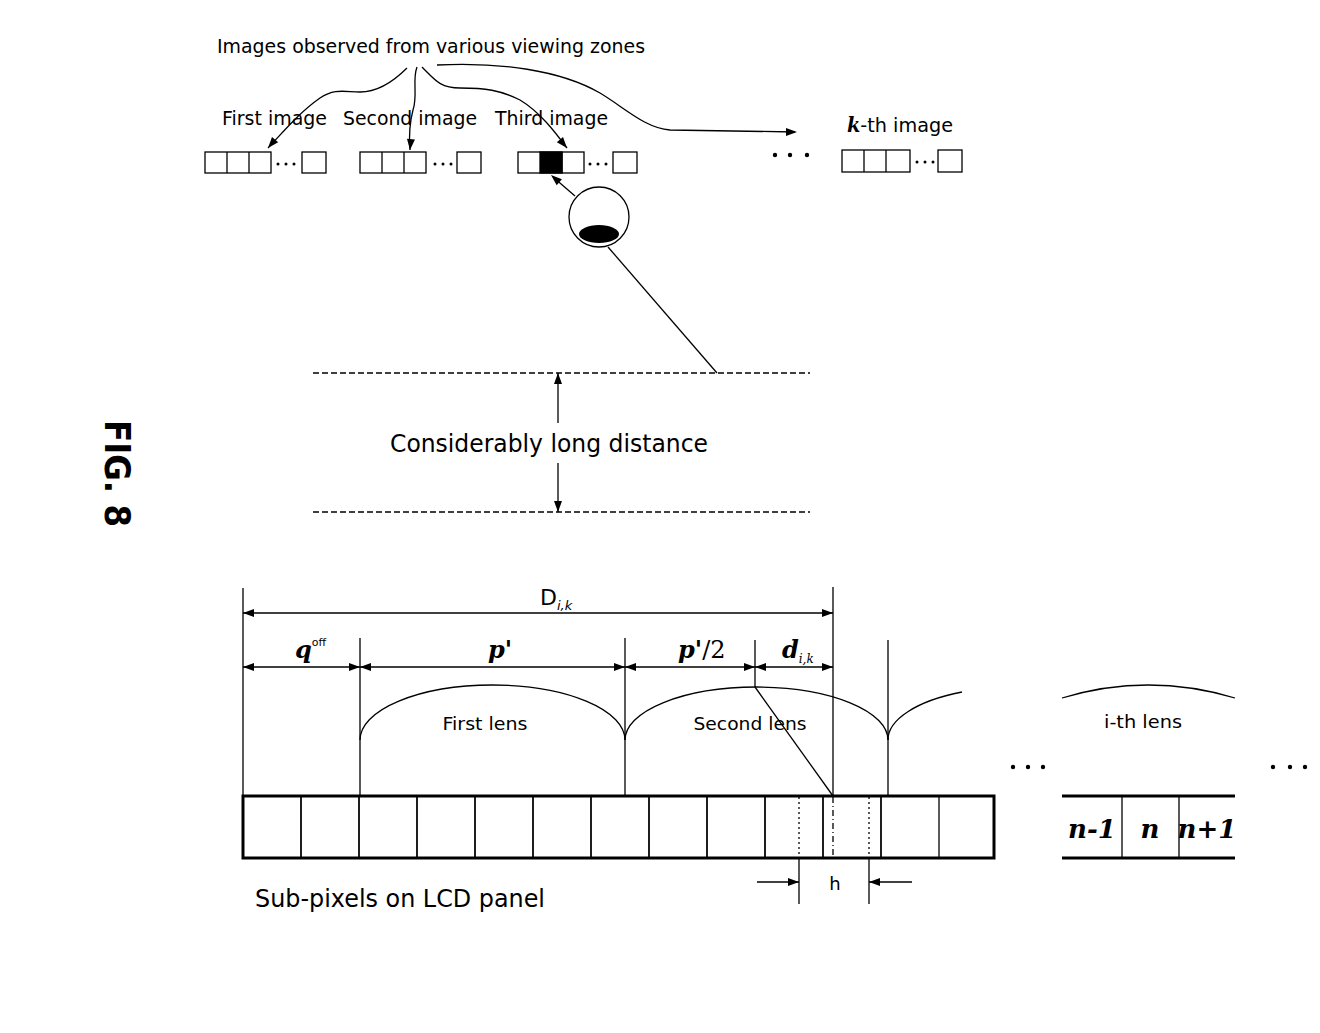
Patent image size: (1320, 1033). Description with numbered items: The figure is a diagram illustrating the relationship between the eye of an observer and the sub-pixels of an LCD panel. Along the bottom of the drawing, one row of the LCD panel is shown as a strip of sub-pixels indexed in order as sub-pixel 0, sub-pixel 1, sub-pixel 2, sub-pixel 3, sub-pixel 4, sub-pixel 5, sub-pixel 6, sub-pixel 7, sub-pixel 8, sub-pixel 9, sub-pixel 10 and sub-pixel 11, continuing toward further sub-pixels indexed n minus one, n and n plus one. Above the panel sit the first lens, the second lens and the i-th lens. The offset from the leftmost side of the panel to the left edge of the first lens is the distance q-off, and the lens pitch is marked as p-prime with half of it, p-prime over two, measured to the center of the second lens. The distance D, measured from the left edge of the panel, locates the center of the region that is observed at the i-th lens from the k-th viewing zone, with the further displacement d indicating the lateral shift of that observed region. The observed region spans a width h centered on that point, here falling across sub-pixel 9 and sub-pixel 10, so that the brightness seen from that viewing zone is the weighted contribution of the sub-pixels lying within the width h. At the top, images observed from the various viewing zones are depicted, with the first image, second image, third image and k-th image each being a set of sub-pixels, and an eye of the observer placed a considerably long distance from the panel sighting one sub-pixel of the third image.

The sub-pixel 0 of LCD panel 0 is at (272, 827).
The sub-pixel 1 of LCD panel 1 is at (330, 827).
The sub-pixel 2 of LCD panel 2 is at (388, 827).
The sub-pixel 3 of LCD panel 3 is at (446, 827).
The sub-pixel 4 of LCD panel 4 is at (504, 827).
The sub-pixel 5 of LCD panel 5 is at (562, 827).
The sub-pixel 6 of LCD panel 6 is at (620, 827).
The sub-pixel 7 of LCD panel 7 is at (678, 827).
The sub-pixel 8 of LCD panel 8 is at (736, 827).
The sub-pixel 9 of LCD panel 9 is at (794, 827).
The sub-pixel 10 of LCD panel 10 is at (852, 827).
The sub-pixel 11 of LCD panel 11 is at (910, 827).